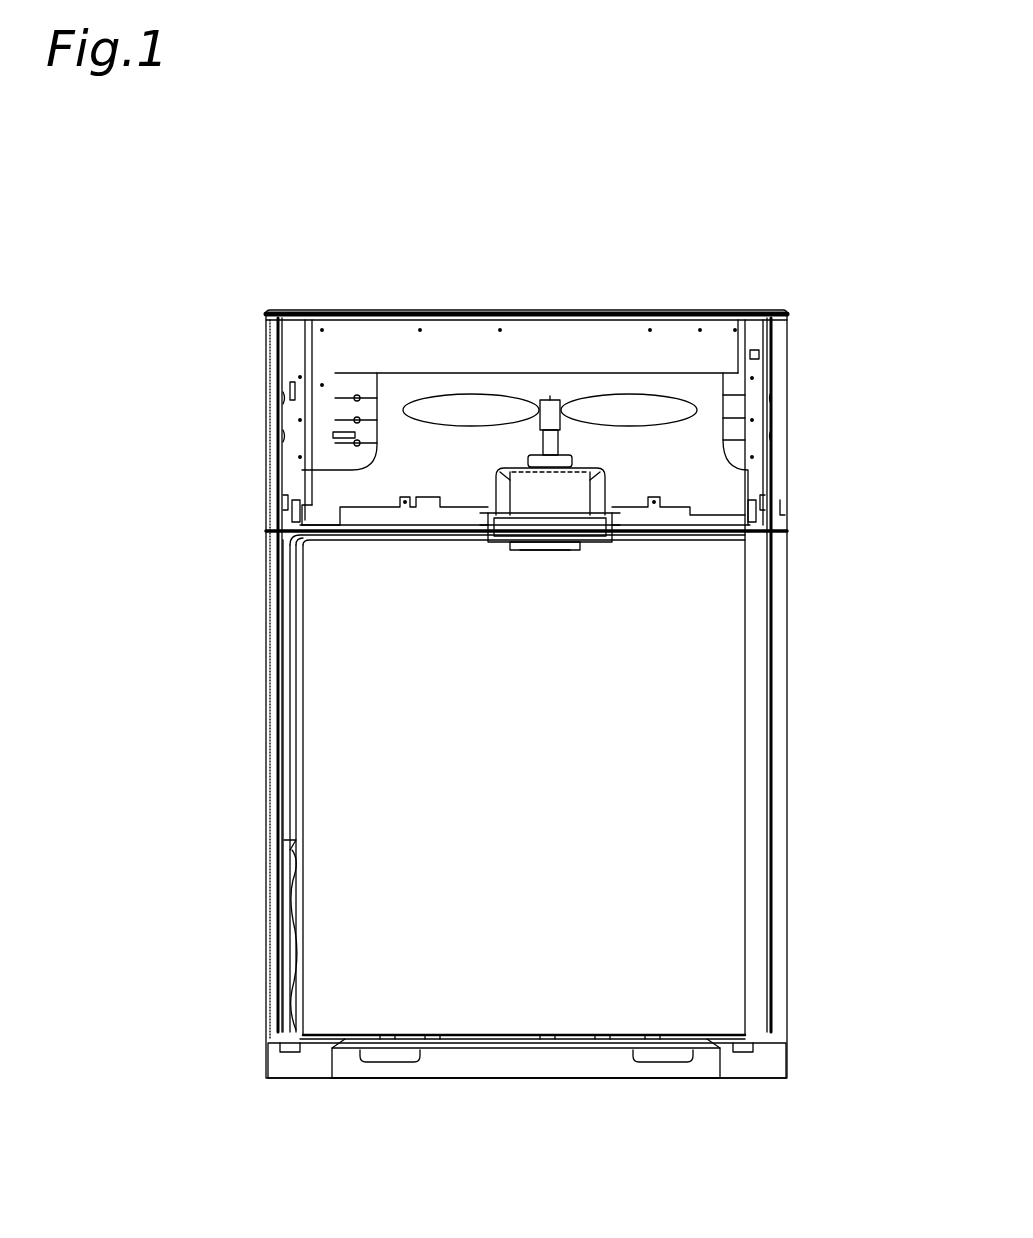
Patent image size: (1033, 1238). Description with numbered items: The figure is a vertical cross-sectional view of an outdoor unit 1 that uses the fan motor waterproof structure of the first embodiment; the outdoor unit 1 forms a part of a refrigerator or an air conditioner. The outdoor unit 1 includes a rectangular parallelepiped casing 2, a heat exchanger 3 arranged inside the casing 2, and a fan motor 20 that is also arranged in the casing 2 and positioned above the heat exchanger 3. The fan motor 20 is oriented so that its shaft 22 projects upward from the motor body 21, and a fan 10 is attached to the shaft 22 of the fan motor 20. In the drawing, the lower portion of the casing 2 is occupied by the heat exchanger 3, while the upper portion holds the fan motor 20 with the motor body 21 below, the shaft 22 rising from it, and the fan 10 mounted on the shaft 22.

The outdoor unit 1 is at (812, 258).
The casing 2 is at (787, 470).
The heat exchanger 3 is at (587, 764).
The fan 10 is at (628, 410).
The fan motor 20 is at (523, 372).
The motor body 21 is at (600, 485).
The shaft 22 is at (569, 331).